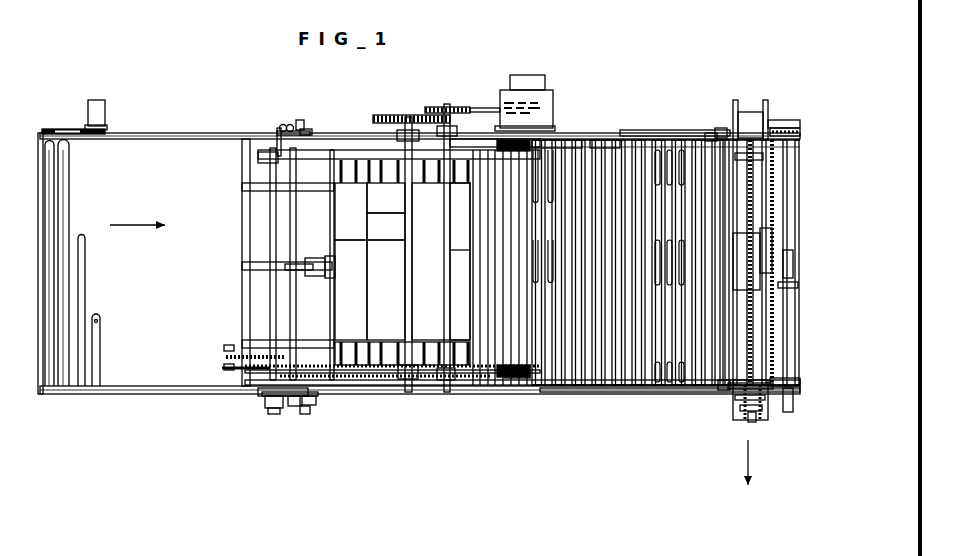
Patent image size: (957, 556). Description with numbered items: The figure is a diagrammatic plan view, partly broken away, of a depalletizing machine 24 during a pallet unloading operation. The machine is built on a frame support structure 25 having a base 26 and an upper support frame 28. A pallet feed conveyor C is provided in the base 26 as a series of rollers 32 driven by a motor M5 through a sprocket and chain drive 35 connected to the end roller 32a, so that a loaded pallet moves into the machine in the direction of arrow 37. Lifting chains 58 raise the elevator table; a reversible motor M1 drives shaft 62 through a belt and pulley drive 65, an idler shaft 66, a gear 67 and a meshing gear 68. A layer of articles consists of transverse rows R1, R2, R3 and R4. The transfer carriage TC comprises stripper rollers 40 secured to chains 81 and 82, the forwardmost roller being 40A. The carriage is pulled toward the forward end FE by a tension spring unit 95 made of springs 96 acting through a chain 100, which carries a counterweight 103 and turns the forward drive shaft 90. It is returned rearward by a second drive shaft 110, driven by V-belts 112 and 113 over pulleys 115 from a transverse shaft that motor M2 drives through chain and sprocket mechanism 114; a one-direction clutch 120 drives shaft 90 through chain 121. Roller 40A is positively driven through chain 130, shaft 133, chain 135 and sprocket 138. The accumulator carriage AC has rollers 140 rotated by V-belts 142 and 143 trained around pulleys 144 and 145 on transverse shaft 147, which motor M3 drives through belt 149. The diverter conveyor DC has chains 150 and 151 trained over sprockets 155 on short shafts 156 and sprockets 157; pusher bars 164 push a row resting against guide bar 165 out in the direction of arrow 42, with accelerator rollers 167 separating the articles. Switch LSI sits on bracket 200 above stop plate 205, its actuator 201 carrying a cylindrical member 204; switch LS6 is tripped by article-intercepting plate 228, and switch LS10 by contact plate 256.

The conveyor machine 24 is at (200, 115).
The frame support structure 25 is at (140, 395).
The base 26 is at (165, 137).
The upper support frame 28 is at (588, 133).
The rollers 32 is at (100, 330).
The end roller 32a is at (50, 183).
The sprocket and chain drive 35 is at (70, 130).
The reference arrow 37 is at (128, 225).
The stripper rollers 40 is at (505, 226).
The forwardmost roller 40A is at (495, 312).
The arrow 42 is at (748, 448).
The lifting chain 58 is at (396, 140).
The shaft 62 is at (408, 266).
The belt and pulley drive 65 is at (478, 110).
The idler shaft 66 is at (448, 264).
The gear 67 is at (440, 108).
The gear 68 is at (386, 116).
The chain 81 is at (330, 160).
The chain 82 is at (350, 376).
The forward transverse rotary drive shaft 90 is at (305, 408).
The tension spring unit 95 is at (279, 131).
The springs 96 is at (290, 124).
The chain 100 is at (302, 122).
The counterweight 103 is at (308, 132).
The second transverse drive shaft 110 is at (272, 207).
The V-belt 112 is at (300, 170).
The V-belt 113 is at (373, 378).
The chain and sprocket mechanism 114 is at (547, 118).
The pulley 115 is at (262, 160).
The one-direction clutch 120 is at (270, 403).
The chain 121 is at (290, 410).
The chain 130 is at (225, 348).
The shaft 133 is at (224, 357).
The second chain 135 is at (222, 368).
The sprocket 138 is at (512, 378).
The transverse rollers 140 is at (608, 315).
The V-belt 142 is at (598, 136).
The V-belt 143 is at (585, 390).
The pulley 144 is at (505, 140).
The pulley 145 is at (785, 128).
The transverse shaft 147 is at (790, 350).
The belt 149 is at (745, 290).
The chain 150 is at (720, 388).
The chain 151 is at (765, 115).
The sprocket 155 is at (733, 108).
The short shaft 156 is at (748, 112).
The sprocket 157 is at (786, 412).
The pusher bars 164 is at (748, 158).
The guide bar 165 is at (778, 310).
The accelerator rollers 167 is at (750, 422).
The stationary bracket 200 is at (265, 262).
The actuator 201 is at (320, 270).
The cylindrical member 204 is at (338, 262).
The transverse stop plate 205 is at (320, 221).
The article-intercepting plate 228 is at (745, 250).
The contact plate 256 is at (715, 288).
The accumulator carriage AC is at (630, 135).
The pallet feed conveyor C is at (38, 185).
The diverter conveyor DC is at (730, 418).
The forward end FE is at (240, 300).
The switch LS6 is at (720, 130).
The switch LS10 is at (712, 135).
The switch LSI is at (280, 275).
The reversible motor M1 is at (540, 62).
The reversible motor M2 is at (540, 104).
The motor M3 is at (785, 232).
The motor M5 is at (100, 107).
The transverse row R1 is at (462, 223).
The transverse row R2 is at (425, 200).
The transverse row R3 is at (399, 231).
The transverse row R4 is at (364, 208).
The transfer carriage TC is at (490, 342).